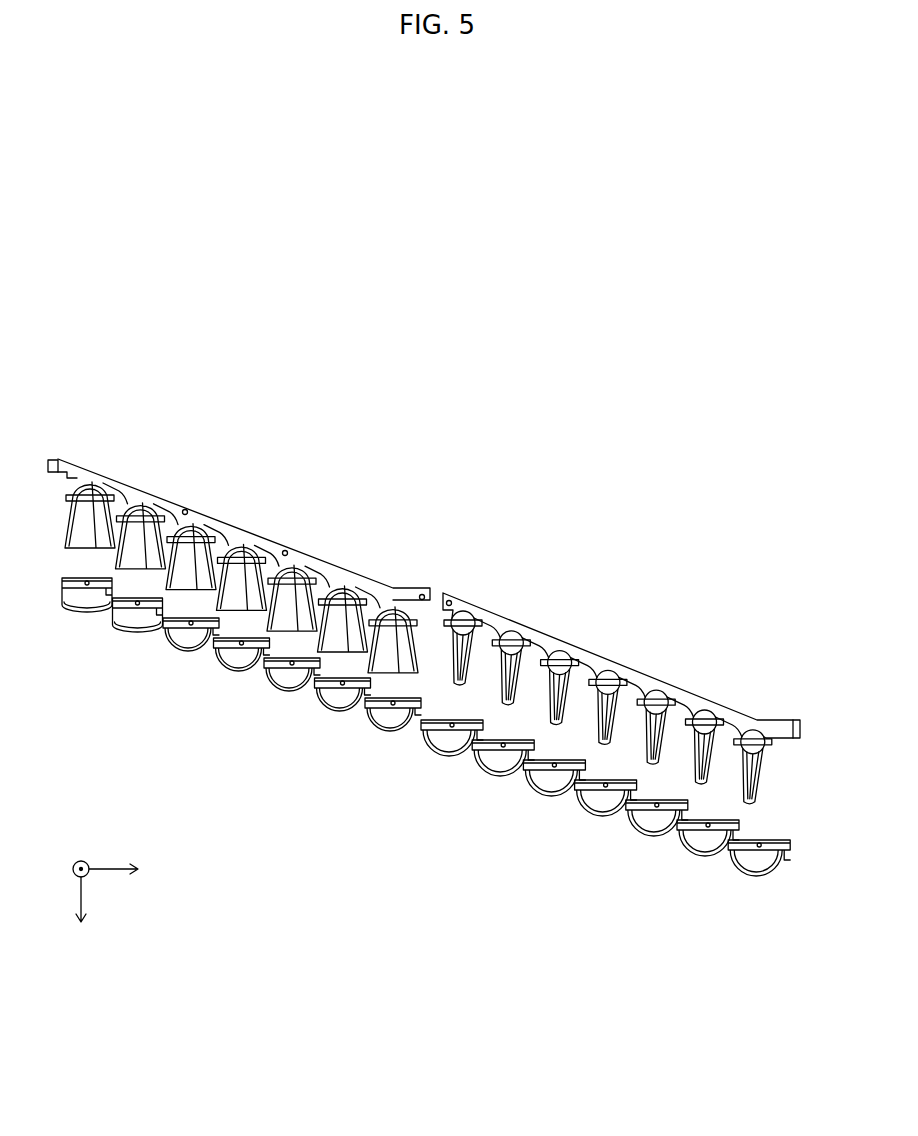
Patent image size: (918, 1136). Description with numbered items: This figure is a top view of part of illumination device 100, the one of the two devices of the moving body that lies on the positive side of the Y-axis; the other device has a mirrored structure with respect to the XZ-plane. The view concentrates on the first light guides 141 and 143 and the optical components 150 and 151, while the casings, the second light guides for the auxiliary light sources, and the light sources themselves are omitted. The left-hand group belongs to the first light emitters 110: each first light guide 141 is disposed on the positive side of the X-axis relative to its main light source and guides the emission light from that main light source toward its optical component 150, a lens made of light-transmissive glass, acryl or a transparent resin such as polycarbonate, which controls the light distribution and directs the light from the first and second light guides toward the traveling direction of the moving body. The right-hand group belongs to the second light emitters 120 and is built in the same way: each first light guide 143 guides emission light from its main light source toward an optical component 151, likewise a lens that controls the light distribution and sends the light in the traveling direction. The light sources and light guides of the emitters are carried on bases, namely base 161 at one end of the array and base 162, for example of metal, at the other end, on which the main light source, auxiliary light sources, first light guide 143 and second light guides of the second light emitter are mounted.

The illumination device 100 is at (727, 408).
The first light emitter 110 is at (40, 399).
The second light emitter 120 is at (830, 536).
The first light guide 141 is at (244, 548).
The first light guide 143 is at (613, 682).
The optical component 150 is at (238, 697).
The optical component 151 is at (597, 837).
The base 161 is at (58, 461).
The base 162 is at (797, 720).